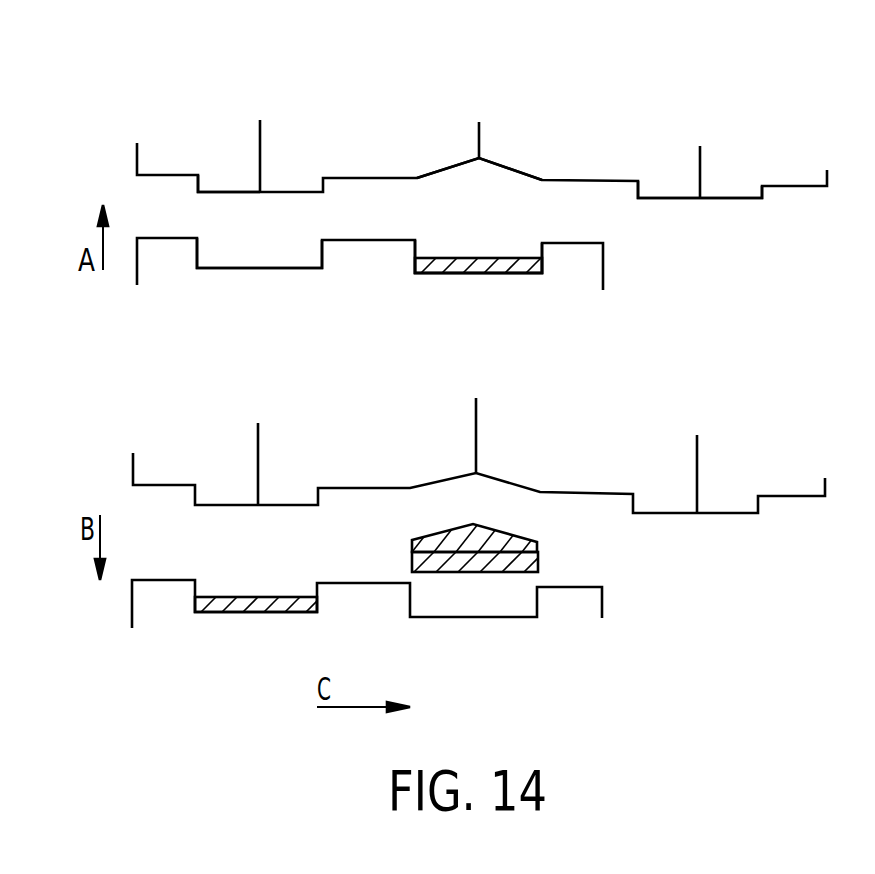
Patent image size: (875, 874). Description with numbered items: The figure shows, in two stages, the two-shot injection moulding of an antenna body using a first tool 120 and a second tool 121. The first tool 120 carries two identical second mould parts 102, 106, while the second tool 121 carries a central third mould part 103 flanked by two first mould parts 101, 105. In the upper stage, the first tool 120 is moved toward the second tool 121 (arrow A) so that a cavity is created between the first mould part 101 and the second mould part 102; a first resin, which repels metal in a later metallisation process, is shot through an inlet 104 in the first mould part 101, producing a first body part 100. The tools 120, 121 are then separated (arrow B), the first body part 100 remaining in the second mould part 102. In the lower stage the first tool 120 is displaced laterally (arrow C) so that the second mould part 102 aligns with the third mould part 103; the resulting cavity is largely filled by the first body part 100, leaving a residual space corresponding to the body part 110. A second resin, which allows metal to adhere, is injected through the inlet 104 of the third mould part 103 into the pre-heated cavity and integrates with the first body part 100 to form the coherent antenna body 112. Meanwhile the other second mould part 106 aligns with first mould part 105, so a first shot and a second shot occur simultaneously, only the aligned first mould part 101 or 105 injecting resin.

The first body part 100 is at (287, 597).
The first mould part 101 is at (229, 192).
The second mould part 102 is at (218, 269).
The third mould part 103 is at (510, 168).
The inlet 104 is at (262, 140).
The first mould part 105 is at (742, 199).
The second mould part 106 is at (413, 262).
The body part 110 is at (507, 258).
The coherent antenna body 112 is at (540, 560).
The first tool 120 is at (272, 352).
The second tool 121 is at (202, 79).